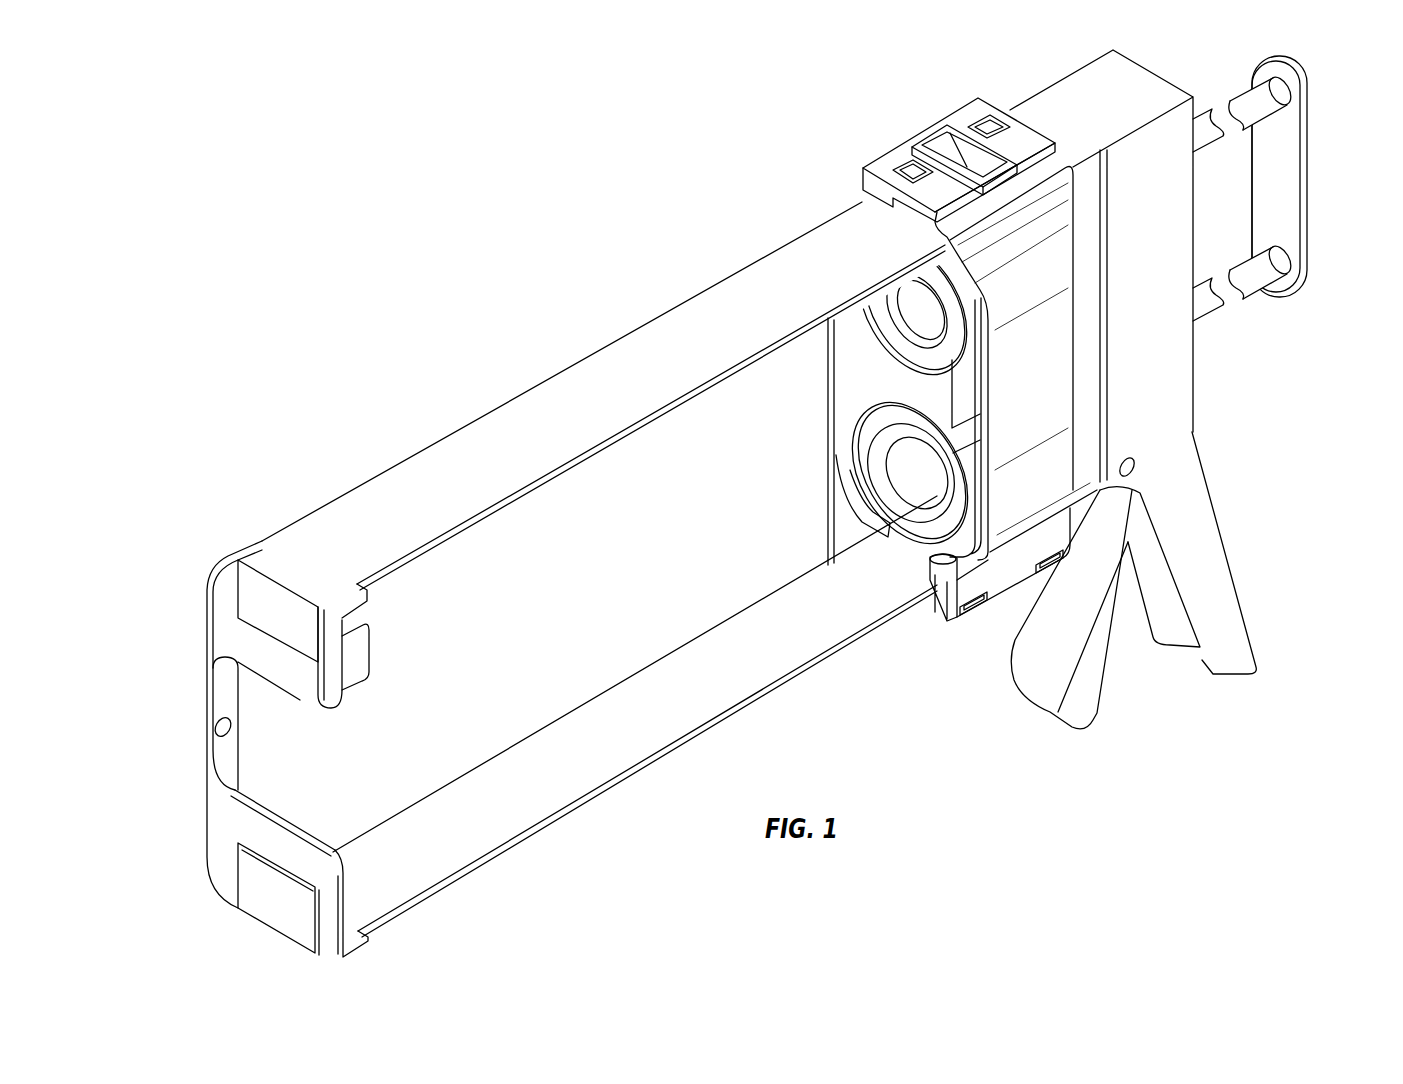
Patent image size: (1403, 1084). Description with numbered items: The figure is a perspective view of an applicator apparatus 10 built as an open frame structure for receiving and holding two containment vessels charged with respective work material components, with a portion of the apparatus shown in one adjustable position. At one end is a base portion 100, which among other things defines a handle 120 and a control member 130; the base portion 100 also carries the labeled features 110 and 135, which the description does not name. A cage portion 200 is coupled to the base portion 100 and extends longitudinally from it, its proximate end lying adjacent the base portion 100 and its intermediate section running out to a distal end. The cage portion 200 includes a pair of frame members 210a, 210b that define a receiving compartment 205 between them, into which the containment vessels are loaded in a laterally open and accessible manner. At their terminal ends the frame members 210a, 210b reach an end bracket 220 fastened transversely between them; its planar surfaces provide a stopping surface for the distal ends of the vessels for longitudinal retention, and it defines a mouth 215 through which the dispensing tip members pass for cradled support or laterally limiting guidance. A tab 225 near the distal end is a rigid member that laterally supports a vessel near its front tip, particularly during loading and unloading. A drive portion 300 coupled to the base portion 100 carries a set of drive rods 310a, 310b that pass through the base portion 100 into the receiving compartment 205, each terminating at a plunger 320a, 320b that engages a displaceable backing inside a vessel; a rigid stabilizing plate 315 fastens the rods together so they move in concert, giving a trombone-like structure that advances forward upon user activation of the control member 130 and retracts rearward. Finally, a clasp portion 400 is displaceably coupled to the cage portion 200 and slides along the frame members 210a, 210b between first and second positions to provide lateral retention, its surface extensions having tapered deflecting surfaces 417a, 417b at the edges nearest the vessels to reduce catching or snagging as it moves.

The applicator apparatus 10 is at (751, 498).
The base portion 100 is at (1151, 394).
The housing body 110 is at (1164, 128).
The handle 120 is at (1213, 577).
The control member 130 is at (1080, 672).
The hole 135 is at (1135, 467).
The cage portion 200 is at (540, 579).
The receiving compartment 205 is at (537, 680).
The frame member 210a is at (413, 518).
The frame member 210b is at (612, 758).
The mouth 215 is at (278, 783).
The end bracket 220 is at (308, 680).
The tab 225 is at (365, 655).
The drive portion 300 is at (1280, 216).
The drive rod 310a is at (1260, 106).
The drive rod 310b is at (1270, 268).
The stabilizing plate 315 is at (1300, 83).
The plunger 320a is at (908, 295).
The plunger 320b is at (905, 467).
The clasp portion 400 is at (901, 405).
The tapered deflecting surface 417a is at (935, 570).
The tapered deflecting surface 417b is at (873, 524).